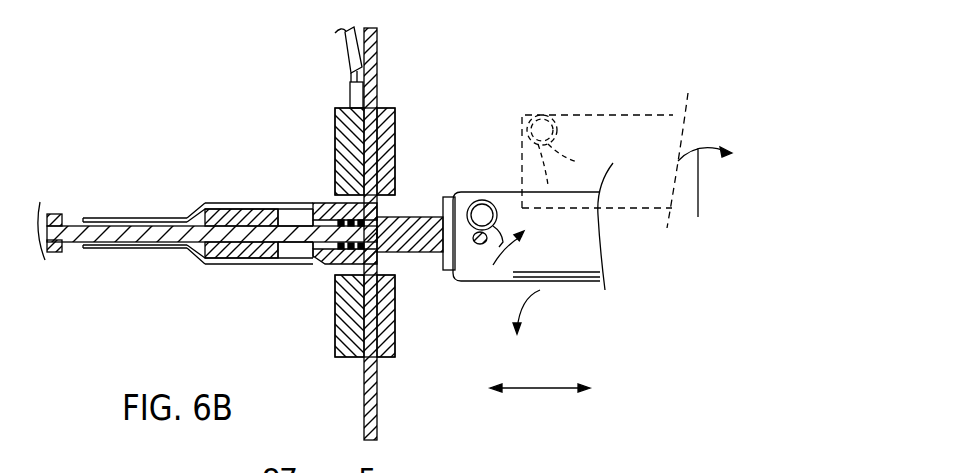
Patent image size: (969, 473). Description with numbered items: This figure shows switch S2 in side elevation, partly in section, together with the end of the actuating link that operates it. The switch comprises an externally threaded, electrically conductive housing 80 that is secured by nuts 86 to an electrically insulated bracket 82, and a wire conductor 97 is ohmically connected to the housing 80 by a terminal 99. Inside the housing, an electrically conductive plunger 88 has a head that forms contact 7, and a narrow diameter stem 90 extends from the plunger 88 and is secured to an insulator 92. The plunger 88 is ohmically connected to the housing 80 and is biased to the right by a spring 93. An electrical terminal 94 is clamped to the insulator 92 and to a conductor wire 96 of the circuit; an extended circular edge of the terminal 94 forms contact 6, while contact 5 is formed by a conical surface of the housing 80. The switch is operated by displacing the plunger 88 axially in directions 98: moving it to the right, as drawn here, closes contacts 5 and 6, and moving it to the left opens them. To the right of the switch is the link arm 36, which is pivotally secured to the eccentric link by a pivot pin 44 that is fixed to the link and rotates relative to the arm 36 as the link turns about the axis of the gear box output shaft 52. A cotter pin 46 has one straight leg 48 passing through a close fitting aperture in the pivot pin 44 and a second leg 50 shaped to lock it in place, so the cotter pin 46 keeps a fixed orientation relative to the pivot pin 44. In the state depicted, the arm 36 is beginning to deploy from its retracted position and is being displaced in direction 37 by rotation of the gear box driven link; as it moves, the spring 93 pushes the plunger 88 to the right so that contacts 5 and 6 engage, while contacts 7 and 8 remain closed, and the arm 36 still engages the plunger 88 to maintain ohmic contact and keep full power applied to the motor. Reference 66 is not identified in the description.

The contact 5 is at (333, 200).
The contact 6 is at (332, 202).
The contact 7 is at (446, 195).
The contact 8 is at (455, 190).
The second link arm 36 is at (572, 272).
The direction 37 is at (705, 196).
The pivot pin 44 is at (495, 238).
The cotter pin 46 is at (475, 192).
The leg 48 is at (485, 247).
The second leg 50 is at (519, 232).
The output shaft 52 is at (297, 296).
The hook 66 is at (520, 253).
The housing 80 is at (398, 197).
The bracket 82 is at (372, 56).
The nuts 86 is at (390, 108).
The plunger 88 is at (423, 256).
The stem 90 is at (263, 266).
The insulator 92 is at (218, 213).
The spring 93 is at (402, 260).
The electrical terminal 94 is at (135, 223).
The conductor wire 96 is at (97, 227).
The wire conductor 97 is at (336, 33).
The directions 98 is at (533, 388).
The terminal 99 is at (350, 84).